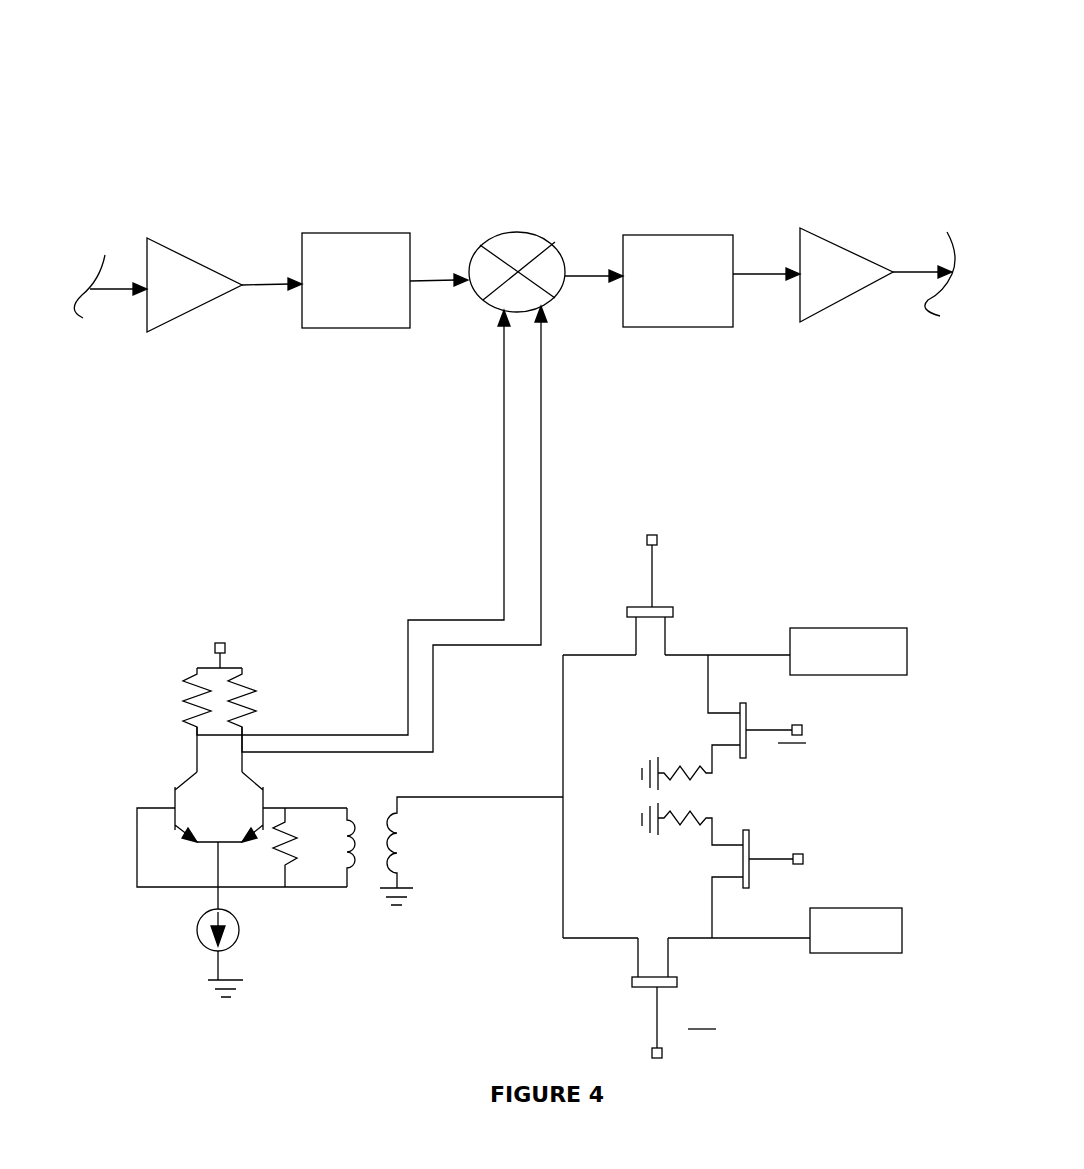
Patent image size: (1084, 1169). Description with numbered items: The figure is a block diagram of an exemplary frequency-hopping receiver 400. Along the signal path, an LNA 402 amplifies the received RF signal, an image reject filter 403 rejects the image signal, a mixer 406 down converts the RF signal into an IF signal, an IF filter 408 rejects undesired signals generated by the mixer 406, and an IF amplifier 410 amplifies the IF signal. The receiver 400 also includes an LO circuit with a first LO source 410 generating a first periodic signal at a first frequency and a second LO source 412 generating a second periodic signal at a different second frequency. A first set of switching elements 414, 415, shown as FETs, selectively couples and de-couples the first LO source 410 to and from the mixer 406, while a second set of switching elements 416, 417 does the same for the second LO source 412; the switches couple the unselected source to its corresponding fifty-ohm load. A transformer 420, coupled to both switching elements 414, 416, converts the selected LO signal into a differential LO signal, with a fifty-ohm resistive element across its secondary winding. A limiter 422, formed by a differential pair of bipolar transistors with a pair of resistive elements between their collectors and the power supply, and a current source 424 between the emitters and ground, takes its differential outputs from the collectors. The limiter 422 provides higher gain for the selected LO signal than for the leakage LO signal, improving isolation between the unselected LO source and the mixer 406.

The frequency-hopping receiver 400 is at (628, 112).
The LNA 402 is at (177, 250).
The image reject filter 403 is at (352, 233).
The mixer 406 is at (522, 223).
The IF filter 408 is at (676, 235).
The IF amplifier / first LO source 410 is at (822, 232).
The second LO source 412 is at (830, 628).
The switching element 414 is at (677, 982).
The switching element 415 is at (745, 830).
The switching element 416 is at (665, 606).
The switching element 417 is at (748, 706).
The transformer 420 is at (403, 836).
The limiter 422 is at (130, 748).
The current source 424 is at (240, 928).